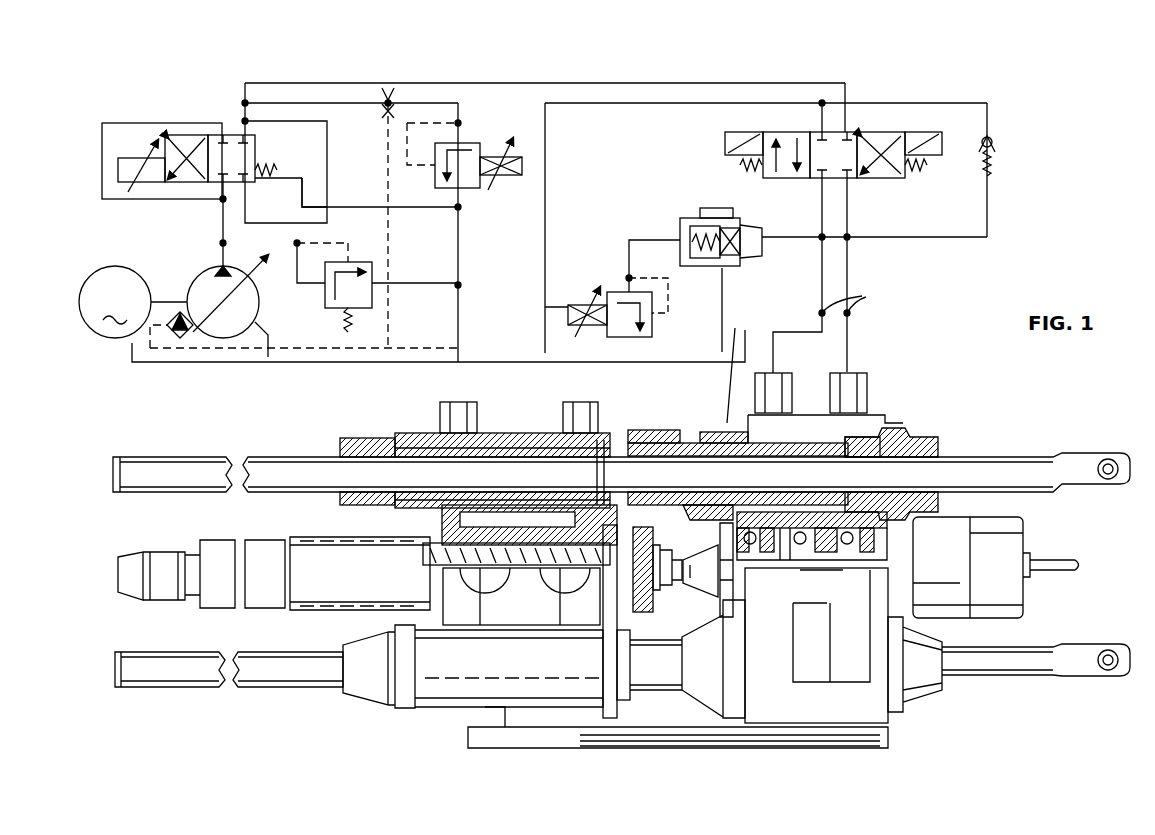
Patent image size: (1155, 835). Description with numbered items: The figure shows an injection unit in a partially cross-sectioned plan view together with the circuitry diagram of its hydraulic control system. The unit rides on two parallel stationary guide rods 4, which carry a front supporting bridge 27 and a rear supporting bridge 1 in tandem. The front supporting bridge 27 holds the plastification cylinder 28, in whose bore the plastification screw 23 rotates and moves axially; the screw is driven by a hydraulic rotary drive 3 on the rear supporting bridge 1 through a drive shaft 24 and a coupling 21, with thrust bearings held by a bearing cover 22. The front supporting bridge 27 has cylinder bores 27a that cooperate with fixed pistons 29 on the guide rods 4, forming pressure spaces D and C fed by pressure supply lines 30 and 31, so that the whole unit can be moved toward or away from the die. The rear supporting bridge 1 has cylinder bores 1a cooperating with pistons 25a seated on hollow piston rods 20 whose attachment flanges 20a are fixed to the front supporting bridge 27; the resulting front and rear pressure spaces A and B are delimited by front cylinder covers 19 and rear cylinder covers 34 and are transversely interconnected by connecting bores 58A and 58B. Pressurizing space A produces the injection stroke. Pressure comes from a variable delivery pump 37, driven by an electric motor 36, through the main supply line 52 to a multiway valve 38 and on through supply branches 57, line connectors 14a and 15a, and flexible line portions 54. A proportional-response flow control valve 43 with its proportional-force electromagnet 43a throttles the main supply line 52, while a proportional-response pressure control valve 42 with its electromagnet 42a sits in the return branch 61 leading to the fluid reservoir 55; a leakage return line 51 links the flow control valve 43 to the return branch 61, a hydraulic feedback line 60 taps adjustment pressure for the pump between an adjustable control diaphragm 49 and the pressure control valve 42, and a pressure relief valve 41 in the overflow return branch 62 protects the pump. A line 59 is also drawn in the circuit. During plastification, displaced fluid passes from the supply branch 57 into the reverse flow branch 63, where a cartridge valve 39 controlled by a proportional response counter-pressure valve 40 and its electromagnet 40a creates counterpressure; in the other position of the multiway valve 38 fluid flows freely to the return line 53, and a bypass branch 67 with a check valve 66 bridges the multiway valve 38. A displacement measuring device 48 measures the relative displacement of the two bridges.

The rear supporting bridge 1 is at (817, 700).
The cylinder bores 1a is at (775, 432).
The hydraulic rotary drive 3 is at (1010, 548).
The guide rods 4 is at (278, 462).
The line connector 14a is at (855, 385).
The line connector 15a is at (760, 373).
The front cylinder covers 19 is at (713, 762).
The hollow piston rods 20 is at (700, 440).
The attachment flanges 20a is at (640, 440).
The coupling 21 is at (705, 585).
The bearing cover 22 is at (735, 530).
The plastification screw 23 is at (465, 600).
The drive shaft 24 is at (793, 560).
The pistons 25a is at (875, 425).
The front supporting bridge 27 is at (523, 672).
The cylinder bores 27a is at (497, 433).
The plastification cylinder 28 is at (285, 580).
The fixed pistons 29 is at (582, 458).
The pressure supply line 30 is at (440, 410).
The pressure supply line 31 is at (586, 372).
The rear cylinder covers 34 is at (915, 445).
The electric motor 36 is at (93, 280).
The variable delivery pump 37 is at (193, 283).
The multiway valve 38 is at (890, 130).
The cartridge valve 39 is at (708, 206).
The proportional response counter-pressure valve 40 is at (581, 274).
The electromagnet 40a is at (565, 310).
The pressure relief valve 41 is at (362, 262).
The proportional-response pressure control valve 42 is at (485, 162).
The proportional-force electromagnet 42a is at (513, 192).
The proportional-response flow control valve 43 is at (158, 134).
The proportional-force electromagnet 43a is at (118, 168).
The displacement measuring device 48 is at (877, 733).
The adjustable control diaphragm 49 is at (368, 124).
The leakage return line 51 is at (428, 207).
The main supply line 52 is at (223, 221).
The return line 53 is at (640, 103).
The flexible line portions 54 is at (855, 300).
The fluid reservoir 55 is at (340, 365).
The supply branches 57 is at (822, 207).
The connecting bore 58A is at (782, 672).
The connecting bore 58B is at (857, 668).
The line 59 is at (300, 121).
The hydraulic feedback line 60 is at (392, 322).
The return branch 61 is at (380, 143).
The overflow return branch 62 is at (282, 250).
The reverse flow branch 63 is at (628, 345).
The check valve 66 is at (998, 150).
The bypass branch 67 is at (987, 210).
The front pressure space A is at (805, 425).
The rear pressure space B is at (885, 495).
The pressure space C is at (615, 433).
The pressure space D is at (535, 433).